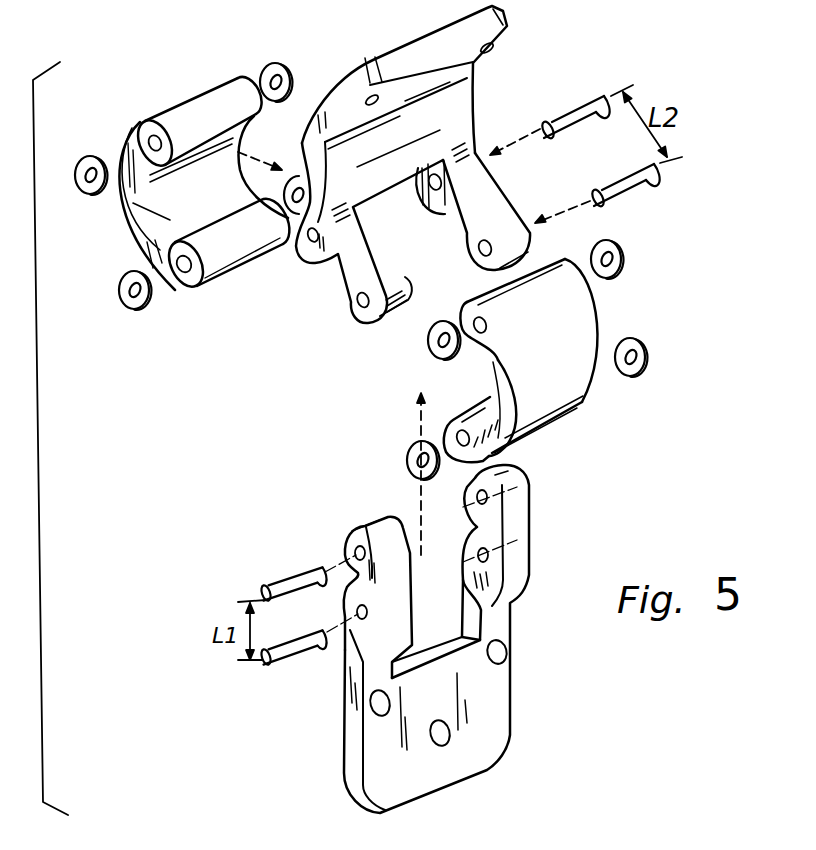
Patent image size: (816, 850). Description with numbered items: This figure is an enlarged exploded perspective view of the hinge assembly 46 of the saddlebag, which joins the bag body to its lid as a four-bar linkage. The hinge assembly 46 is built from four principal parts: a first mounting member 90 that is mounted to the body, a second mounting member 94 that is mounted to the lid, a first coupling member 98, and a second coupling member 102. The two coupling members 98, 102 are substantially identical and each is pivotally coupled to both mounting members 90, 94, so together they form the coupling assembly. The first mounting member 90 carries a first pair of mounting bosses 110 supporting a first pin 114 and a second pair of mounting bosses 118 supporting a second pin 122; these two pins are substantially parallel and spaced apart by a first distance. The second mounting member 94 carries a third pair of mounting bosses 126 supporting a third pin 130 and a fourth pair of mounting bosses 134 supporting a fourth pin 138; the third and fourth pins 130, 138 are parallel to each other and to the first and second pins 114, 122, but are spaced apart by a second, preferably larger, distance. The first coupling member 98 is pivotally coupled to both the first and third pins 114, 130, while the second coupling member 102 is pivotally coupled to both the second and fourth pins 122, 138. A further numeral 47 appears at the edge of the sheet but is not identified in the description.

The hinge assembly 46 is at (620, 718).
The reference numeral (partially visible) 47 is at (236, 842).
The first mounting member 90 is at (487, 750).
The second mounting member 94 is at (408, 53).
The first coupling member 98 is at (590, 307).
The second coupling member 102 is at (213, 92).
The first pair of mounting bosses 110 is at (370, 597).
The first pin 114 is at (277, 656).
The second pair of mounting bosses 118 is at (390, 521).
The second pin 122 is at (288, 582).
The third pair of mounting bosses 126 is at (481, 262).
The third pin 130 is at (640, 180).
The fourth pair of mounting bosses 134 is at (335, 235).
The fourth pin 138 is at (578, 113).